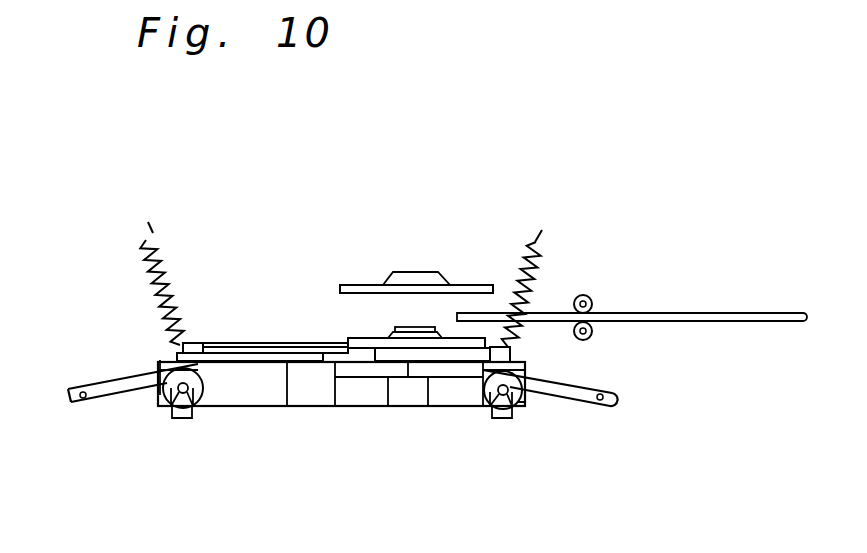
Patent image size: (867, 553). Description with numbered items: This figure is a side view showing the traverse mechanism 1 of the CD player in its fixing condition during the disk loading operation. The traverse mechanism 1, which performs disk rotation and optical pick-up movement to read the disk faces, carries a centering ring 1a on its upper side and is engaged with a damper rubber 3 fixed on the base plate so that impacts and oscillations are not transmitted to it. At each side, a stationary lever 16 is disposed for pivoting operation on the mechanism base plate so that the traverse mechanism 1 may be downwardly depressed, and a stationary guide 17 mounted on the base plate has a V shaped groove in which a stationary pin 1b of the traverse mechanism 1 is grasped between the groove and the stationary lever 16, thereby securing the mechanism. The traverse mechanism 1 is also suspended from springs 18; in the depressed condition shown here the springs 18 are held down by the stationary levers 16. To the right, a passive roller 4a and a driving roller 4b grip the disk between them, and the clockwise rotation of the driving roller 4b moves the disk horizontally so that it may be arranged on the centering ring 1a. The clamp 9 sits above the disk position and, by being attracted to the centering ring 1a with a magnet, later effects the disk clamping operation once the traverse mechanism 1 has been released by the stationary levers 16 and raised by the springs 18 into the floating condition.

The traverse mechanism 1 is at (259, 393).
The centering ring 1a is at (388, 335).
The stationary pin 1b is at (190, 417).
The damper rubber 3 is at (160, 395).
The passive roller 4a is at (588, 296).
The driving roller 4b is at (588, 340).
The clamp 9 is at (422, 277).
The stationary lever 16 is at (118, 378).
The stationary guide 17 is at (174, 418).
The spring 18 is at (148, 267).